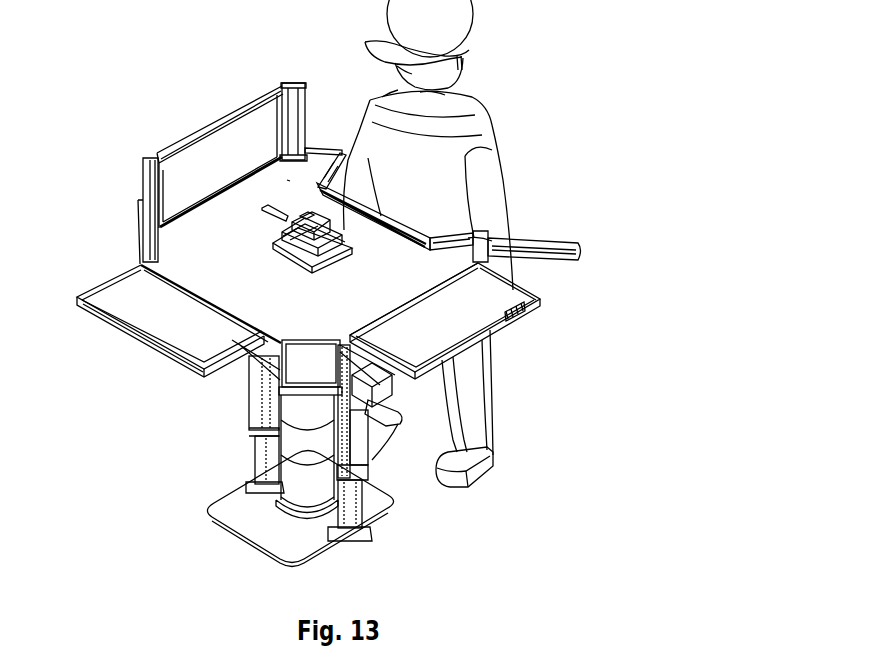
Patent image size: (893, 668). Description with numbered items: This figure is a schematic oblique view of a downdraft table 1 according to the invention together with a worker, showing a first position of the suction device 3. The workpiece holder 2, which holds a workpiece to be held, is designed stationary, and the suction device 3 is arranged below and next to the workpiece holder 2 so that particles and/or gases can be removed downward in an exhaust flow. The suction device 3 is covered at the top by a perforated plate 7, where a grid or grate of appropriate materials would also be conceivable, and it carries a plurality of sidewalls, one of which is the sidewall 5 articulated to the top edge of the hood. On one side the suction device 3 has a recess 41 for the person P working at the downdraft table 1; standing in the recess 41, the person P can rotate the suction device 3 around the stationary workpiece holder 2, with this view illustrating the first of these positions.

The downdraft table 1 is at (48, 508).
The workpiece holder 2 is at (331, 249).
The suction device 3 is at (141, 168).
The sidewall 5 is at (208, 160).
The perforated plate 7 is at (230, 279).
The recess 41 is at (401, 222).
The person P is at (493, 124).